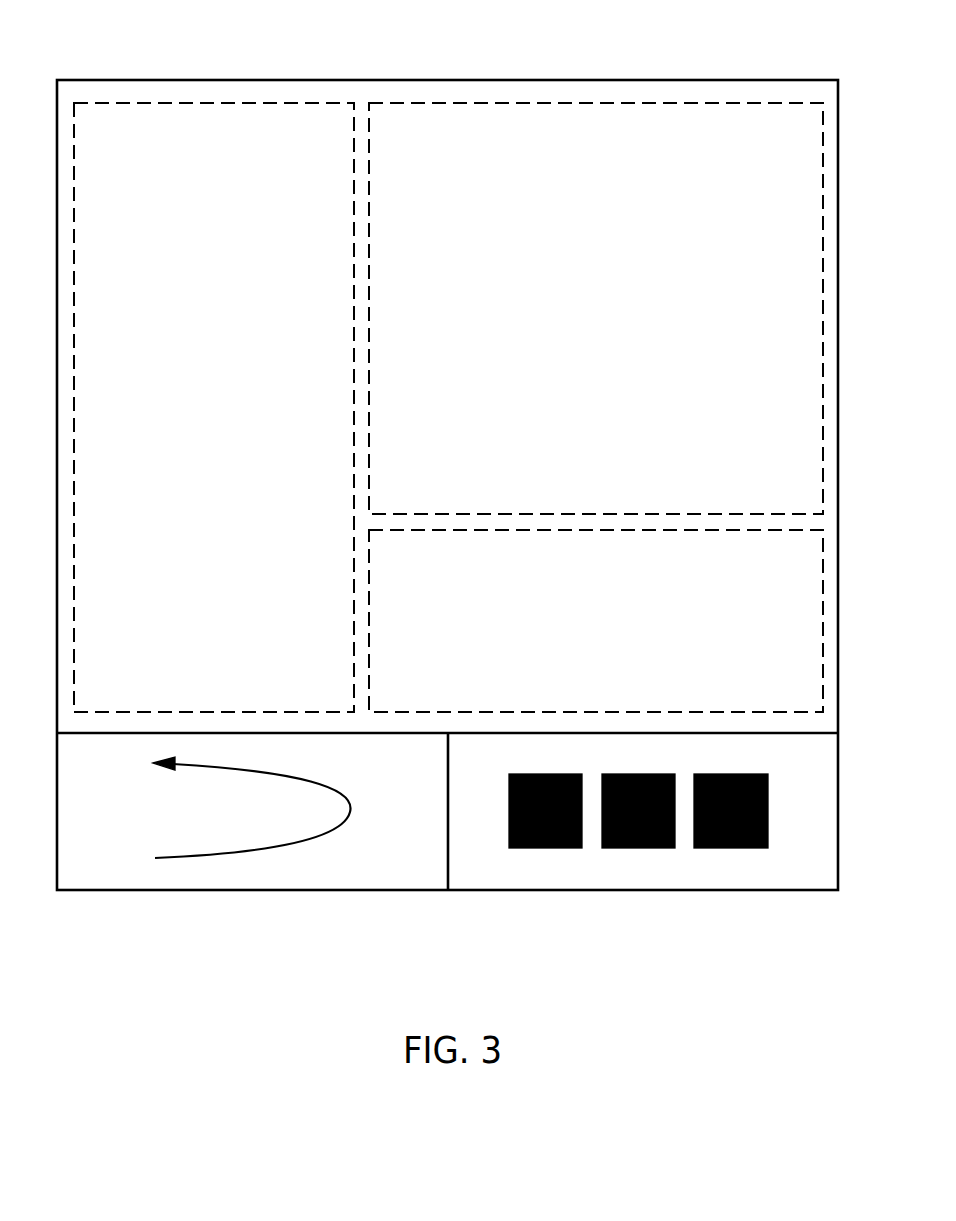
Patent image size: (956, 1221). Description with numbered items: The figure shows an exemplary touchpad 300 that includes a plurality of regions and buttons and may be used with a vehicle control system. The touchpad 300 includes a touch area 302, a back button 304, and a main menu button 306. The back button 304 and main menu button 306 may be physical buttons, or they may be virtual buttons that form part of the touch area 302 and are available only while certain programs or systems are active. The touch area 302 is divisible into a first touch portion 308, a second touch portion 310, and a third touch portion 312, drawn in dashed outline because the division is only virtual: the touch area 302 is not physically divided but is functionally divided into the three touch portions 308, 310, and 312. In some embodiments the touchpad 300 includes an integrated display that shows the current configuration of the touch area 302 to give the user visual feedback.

The touchpad 300 is at (573, 80).
The touch area 302 is at (448, 376).
The back button 304 is at (297, 872).
The main menu button 306 is at (601, 872).
The first touch portion 308 is at (233, 390).
The second touch portion 310 is at (603, 317).
The third touch portion 312 is at (603, 632).